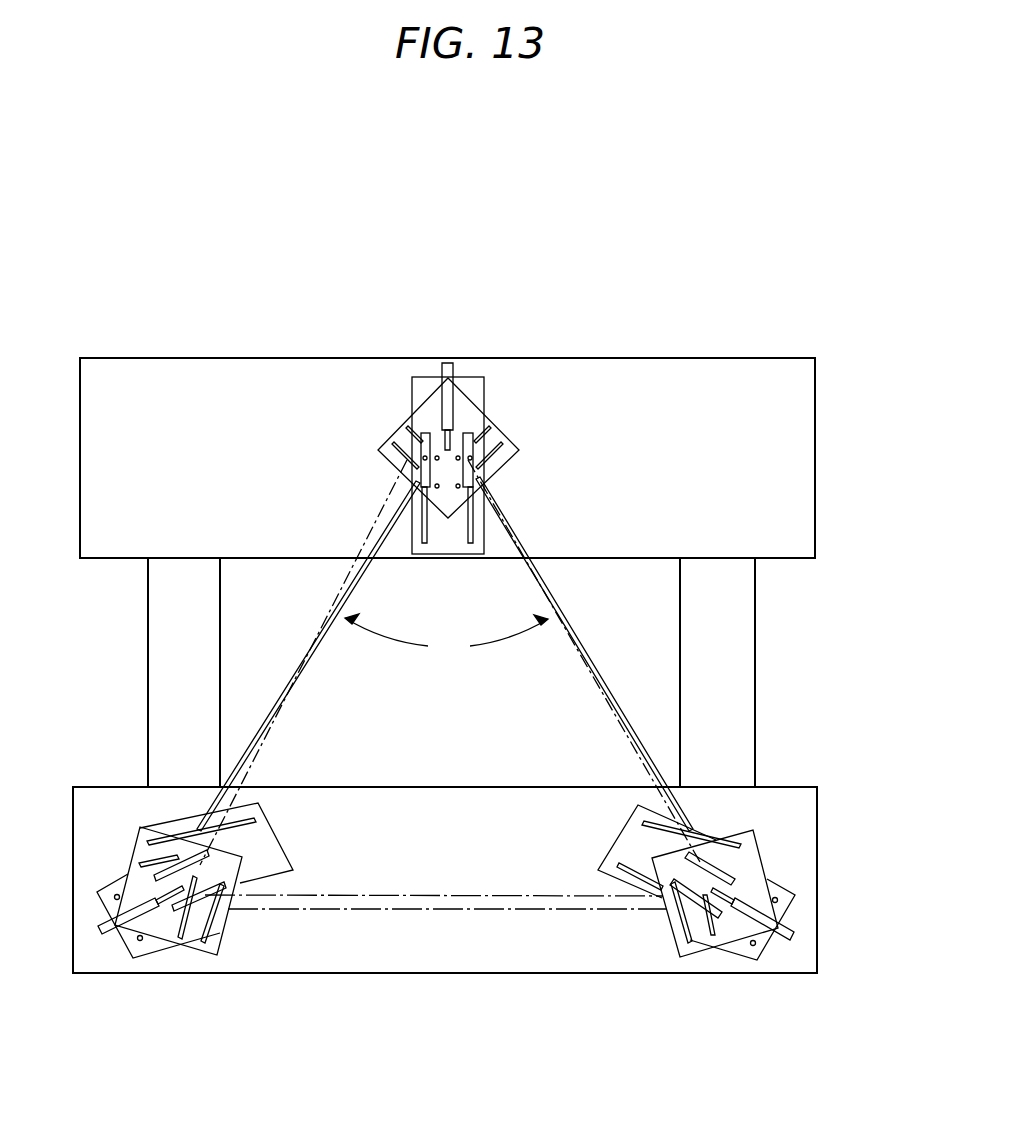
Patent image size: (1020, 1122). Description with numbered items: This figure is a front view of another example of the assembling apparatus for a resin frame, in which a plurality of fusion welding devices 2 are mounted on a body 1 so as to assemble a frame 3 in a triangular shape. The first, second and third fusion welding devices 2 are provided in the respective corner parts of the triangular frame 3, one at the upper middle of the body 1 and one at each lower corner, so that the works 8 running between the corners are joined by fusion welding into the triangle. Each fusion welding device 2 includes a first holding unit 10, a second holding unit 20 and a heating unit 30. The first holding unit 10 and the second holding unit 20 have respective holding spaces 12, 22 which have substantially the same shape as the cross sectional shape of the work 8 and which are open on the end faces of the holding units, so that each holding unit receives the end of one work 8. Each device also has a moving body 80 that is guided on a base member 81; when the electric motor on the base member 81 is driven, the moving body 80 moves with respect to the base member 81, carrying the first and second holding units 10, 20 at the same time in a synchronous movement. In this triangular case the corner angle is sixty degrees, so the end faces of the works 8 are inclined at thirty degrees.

The body 1 is at (673, 355).
The fusion welding device 2 is at (500, 388).
The frame 3 is at (627, 703).
The work 8 is at (313, 642).
The first holding unit 10 is at (487, 412).
The holding space 12 is at (483, 465).
The second holding unit 20 is at (415, 438).
The holding space 22 is at (417, 465).
The heating unit 30 is at (100, 930).
The moving body 80 is at (423, 408).
The base member 81 is at (448, 542).